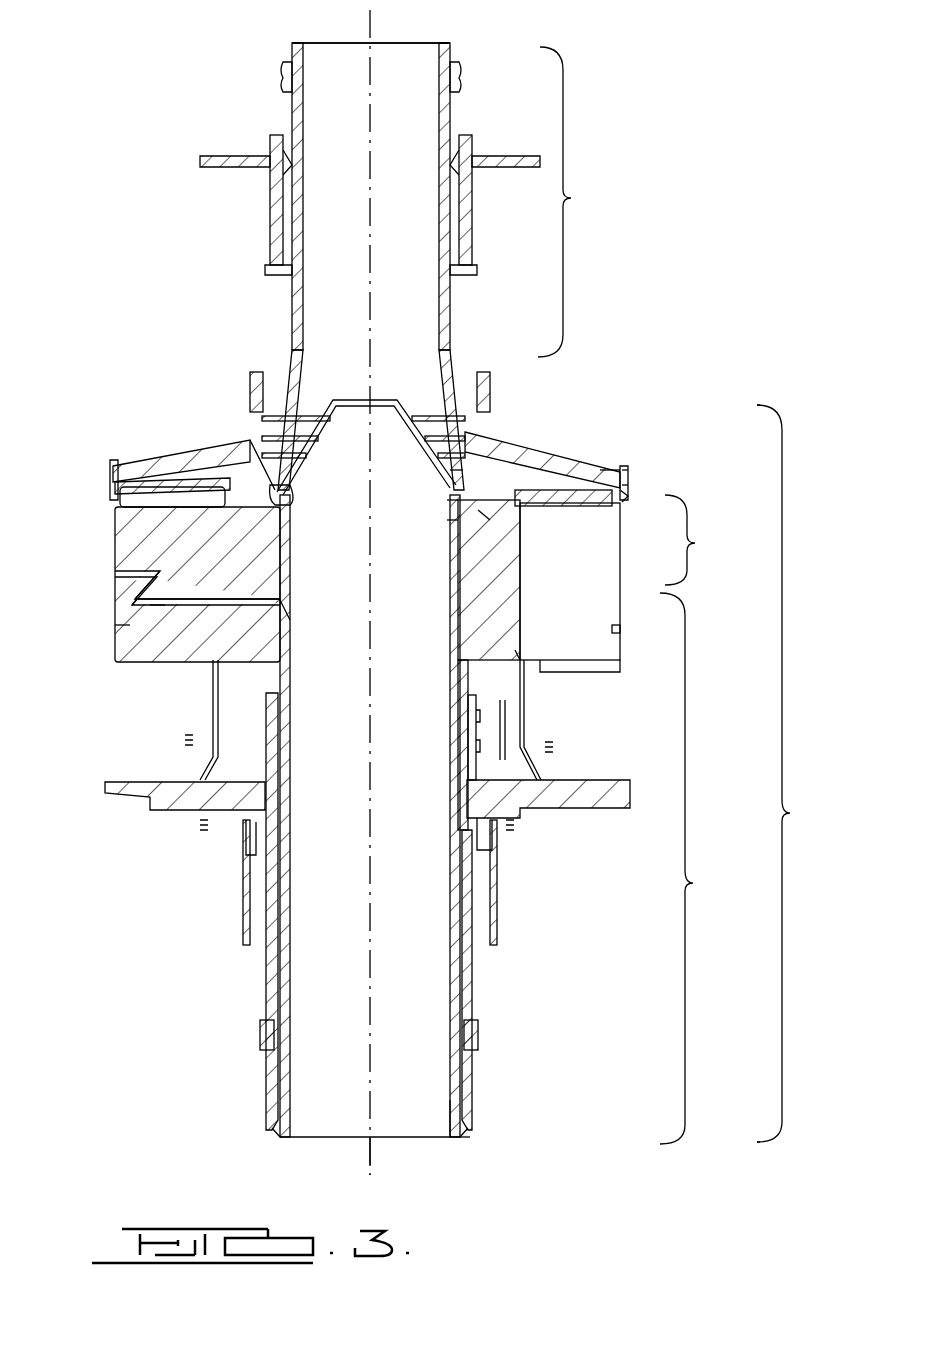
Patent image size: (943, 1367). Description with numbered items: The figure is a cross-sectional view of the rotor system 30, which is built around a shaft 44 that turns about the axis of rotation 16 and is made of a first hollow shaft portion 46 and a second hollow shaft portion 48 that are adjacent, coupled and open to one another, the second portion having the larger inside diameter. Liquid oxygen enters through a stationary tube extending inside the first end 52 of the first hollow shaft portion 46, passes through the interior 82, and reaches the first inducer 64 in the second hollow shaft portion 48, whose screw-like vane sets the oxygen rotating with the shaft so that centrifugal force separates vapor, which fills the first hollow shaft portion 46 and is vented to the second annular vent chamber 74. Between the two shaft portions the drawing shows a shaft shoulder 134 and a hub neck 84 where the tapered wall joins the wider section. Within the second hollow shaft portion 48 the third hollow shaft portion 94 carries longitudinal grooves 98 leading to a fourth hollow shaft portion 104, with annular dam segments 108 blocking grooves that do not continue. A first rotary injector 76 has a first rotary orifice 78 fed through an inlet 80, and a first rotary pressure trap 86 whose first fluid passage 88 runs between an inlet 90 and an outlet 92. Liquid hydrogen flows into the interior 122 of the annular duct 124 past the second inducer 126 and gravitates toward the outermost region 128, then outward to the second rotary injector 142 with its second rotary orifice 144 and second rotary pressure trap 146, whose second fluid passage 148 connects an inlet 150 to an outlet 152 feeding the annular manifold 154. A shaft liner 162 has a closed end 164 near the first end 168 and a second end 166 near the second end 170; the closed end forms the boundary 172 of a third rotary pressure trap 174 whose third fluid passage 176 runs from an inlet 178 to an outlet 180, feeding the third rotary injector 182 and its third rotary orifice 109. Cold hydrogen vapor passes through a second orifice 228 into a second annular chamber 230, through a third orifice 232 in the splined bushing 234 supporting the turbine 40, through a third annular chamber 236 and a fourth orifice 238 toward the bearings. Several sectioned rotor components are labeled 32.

The axis of rotation 16 is at (365, 1145).
The rotor system 30 is at (121, 131).
The rotor components 32 is at (100, 506).
The turbine 40 is at (600, 802).
The shaft 44 is at (290, 100).
The first hollow shaft portion 46 is at (609, 202).
The second hollow shaft portion 48 is at (803, 773).
The first end of the first hollow shaft portion 52 is at (450, 42).
The first inducer 64 is at (445, 434).
The second annular vent chamber 74 is at (275, 42).
The first rotary injector 76 is at (80, 598).
The first rotary orifice 78 is at (118, 574).
The inlet 80 is at (280, 603).
The interior of the first hollow shaft portion 82 is at (297, 355).
The hub neck 84 is at (286, 502).
The first rotary pressure trap 86 is at (150, 622).
The first fluid passage 88 is at (135, 607).
The inlet 90 is at (157, 609).
The outlet 92 is at (160, 590).
The third hollow shaft portion 94 is at (702, 540).
The grooves 98 is at (452, 890).
The fourth hollow shaft portion 104 is at (706, 868).
The annular dam segments 108 is at (283, 618).
The third rotary orifice 109 is at (272, 1137).
The interior of the annular duct 122 is at (465, 380).
The annular duct 124 is at (525, 462).
The second inducer 126 is at (258, 372).
The outermost region of the annular duct 128 is at (624, 455).
The shaft shoulder 134 is at (455, 350).
The second rotary injector 142 is at (625, 488).
The second rotary orifice 144 is at (621, 629).
The second rotary pressure trap 146 is at (630, 472).
The second fluid passage 148 is at (626, 493).
The inlet 150 is at (600, 462).
The outlet 152 is at (604, 497).
The annular manifold 154 is at (150, 480).
The shaft liner 162 is at (290, 995).
The closed end of the shaft liner 164 is at (397, 398).
The second end of the shaft liner 166 is at (430, 1125).
The first end of the second hollow shaft portion 168 is at (755, 400).
The second end of the second hollow shaft portion 170 is at (765, 1143).
The boundary 172 is at (268, 478).
The third rotary pressure trap 174 is at (440, 500).
The third fluid passage 176 is at (488, 520).
The inlet 178 is at (455, 464).
The outlet 180 is at (455, 530).
The third rotary injector 182 is at (520, 1150).
The second orifice 228 is at (520, 655).
The second annular chamber 230 is at (500, 690).
The third orifice 232 is at (502, 767).
The splined bushing 234 is at (472, 726).
The third annular chamber 236 is at (464, 768).
The fourth orifice 238 is at (468, 821).